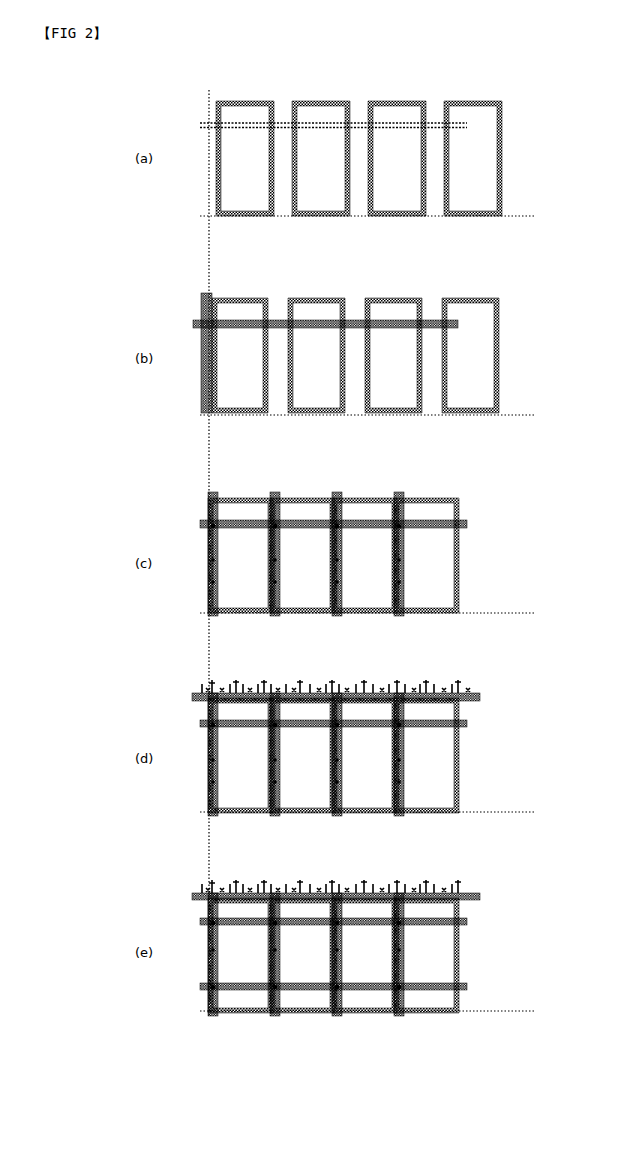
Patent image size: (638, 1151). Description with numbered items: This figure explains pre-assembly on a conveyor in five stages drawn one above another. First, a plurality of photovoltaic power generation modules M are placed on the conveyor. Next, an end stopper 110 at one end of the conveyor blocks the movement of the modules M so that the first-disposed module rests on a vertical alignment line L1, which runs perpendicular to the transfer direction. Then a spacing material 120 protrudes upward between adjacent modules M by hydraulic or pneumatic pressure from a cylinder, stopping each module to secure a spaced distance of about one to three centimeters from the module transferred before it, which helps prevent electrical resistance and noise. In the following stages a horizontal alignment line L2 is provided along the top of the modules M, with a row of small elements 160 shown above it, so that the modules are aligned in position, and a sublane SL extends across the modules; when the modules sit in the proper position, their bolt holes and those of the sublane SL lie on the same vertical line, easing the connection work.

The photovoltaic power generation module M is at (485, 170).
The end stopper 110 is at (200, 328).
The spacing material 120 is at (400, 578).
The connection pads 160 is at (466, 694).
The vertical alignment line L1 is at (215, 428).
The horizontal alignment line L2 is at (472, 700).
The sublane SL is at (462, 986).